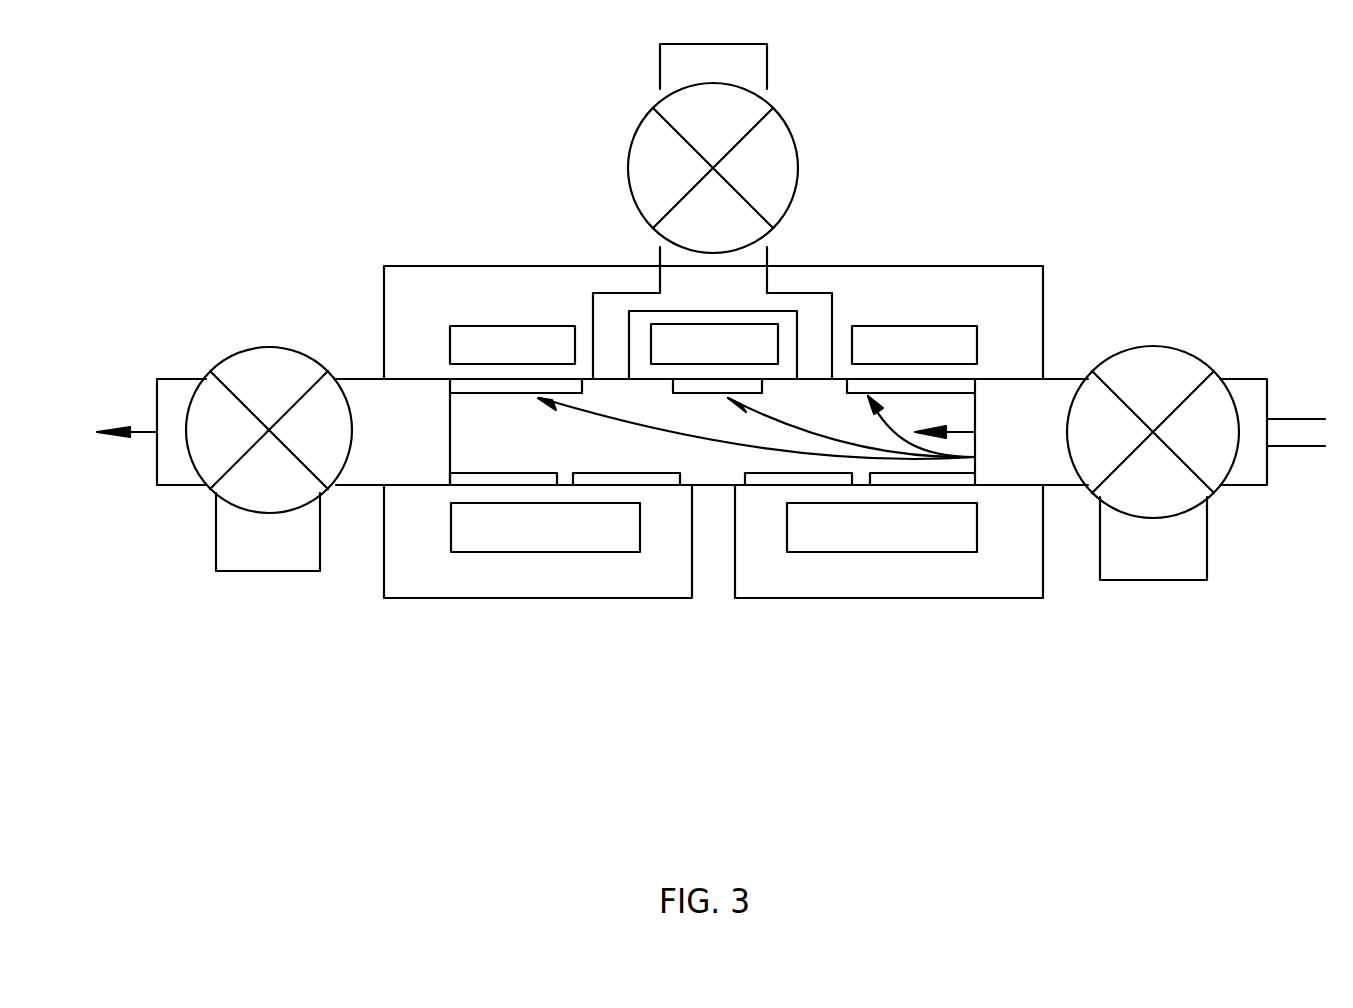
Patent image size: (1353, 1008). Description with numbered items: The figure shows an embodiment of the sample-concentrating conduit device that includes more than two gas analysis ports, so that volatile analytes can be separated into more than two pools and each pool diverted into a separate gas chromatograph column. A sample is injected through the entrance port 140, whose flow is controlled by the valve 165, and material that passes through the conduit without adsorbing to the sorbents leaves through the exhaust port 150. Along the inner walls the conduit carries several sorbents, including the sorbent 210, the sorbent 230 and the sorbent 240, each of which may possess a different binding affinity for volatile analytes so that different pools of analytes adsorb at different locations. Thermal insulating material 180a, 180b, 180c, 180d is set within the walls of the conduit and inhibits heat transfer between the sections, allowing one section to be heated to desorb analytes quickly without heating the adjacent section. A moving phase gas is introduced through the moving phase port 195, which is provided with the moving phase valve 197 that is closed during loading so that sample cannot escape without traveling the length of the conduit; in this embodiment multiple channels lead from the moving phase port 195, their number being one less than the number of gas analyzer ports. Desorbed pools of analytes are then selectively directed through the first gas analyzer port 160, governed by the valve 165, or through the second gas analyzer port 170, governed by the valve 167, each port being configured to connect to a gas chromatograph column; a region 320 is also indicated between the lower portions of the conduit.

The entrance port 140 is at (1063, 378).
The exhaust port 150 is at (338, 376).
The first gas analyzer port 160 is at (1208, 547).
The valve 165 is at (1177, 348).
The valve 167 is at (245, 347).
The second gas analyzer port 170 is at (270, 571).
The thermal insulating material 180a is at (547, 360).
The thermal insulating material 180b is at (940, 360).
The thermal insulating material 180c is at (550, 543).
The thermal insulating material 180d is at (915, 543).
The moving phase port 195 is at (659, 257).
The moving phase valve 197 is at (793, 127).
The sorbent 210 is at (472, 395).
The sorbent 230 is at (765, 471).
The sorbent 240 is at (953, 395).
The gap 320 is at (713, 592).